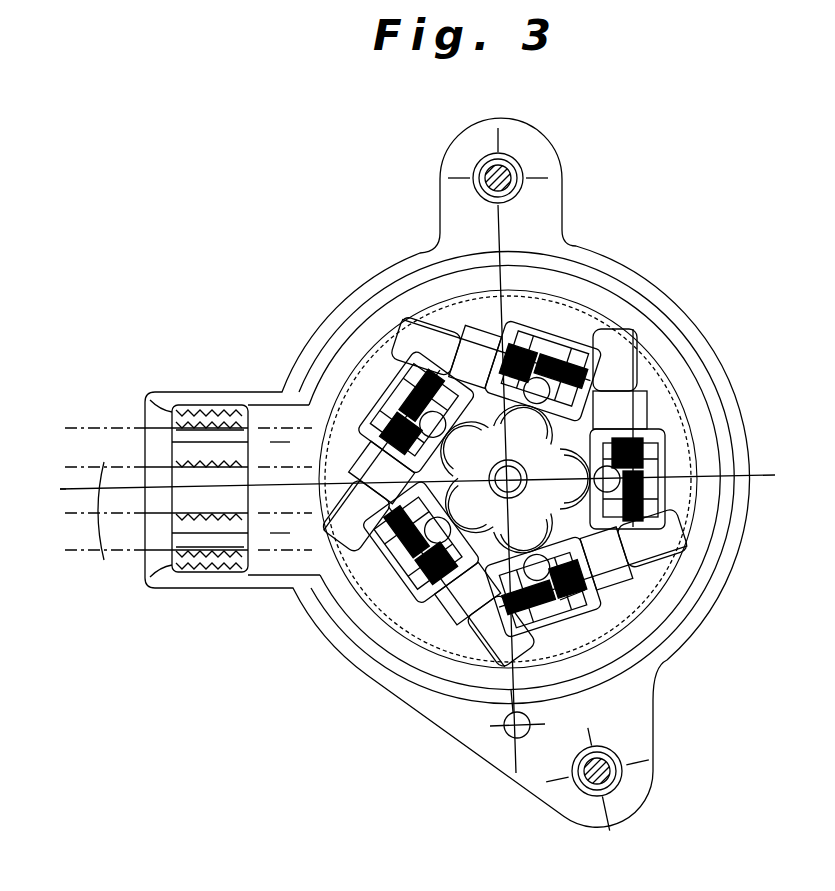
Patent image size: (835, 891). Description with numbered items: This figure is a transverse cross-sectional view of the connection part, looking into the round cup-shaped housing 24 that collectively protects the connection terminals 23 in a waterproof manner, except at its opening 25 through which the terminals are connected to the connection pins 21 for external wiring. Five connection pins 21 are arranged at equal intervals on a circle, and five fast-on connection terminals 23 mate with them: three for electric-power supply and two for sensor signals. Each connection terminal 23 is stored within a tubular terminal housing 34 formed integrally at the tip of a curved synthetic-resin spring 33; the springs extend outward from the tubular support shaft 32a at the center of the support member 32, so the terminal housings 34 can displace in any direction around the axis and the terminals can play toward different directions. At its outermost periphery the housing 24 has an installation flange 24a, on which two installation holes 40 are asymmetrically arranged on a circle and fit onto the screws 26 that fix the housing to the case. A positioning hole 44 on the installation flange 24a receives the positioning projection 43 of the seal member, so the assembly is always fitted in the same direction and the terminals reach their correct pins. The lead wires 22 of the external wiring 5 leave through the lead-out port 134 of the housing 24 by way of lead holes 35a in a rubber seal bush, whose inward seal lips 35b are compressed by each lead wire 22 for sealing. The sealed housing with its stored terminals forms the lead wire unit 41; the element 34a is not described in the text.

The external wiring 5 is at (95, 412).
The connection pins for external wiring 21 is at (653, 428).
The lead wires 22 is at (112, 568).
The connection terminals 23 is at (677, 552).
The housing 24 is at (650, 288).
The installation flange 24a is at (740, 521).
The opening 25 is at (372, 622).
The screws 26 is at (491, 162).
The support member 32 is at (478, 438).
The support shaft 32a is at (601, 577).
The synthetic-resin springs 33 is at (487, 487).
The terminal housings 34 is at (410, 372).
The brush 34a is at (703, 457).
The lead holes 35a is at (240, 430).
The seal lips 35b is at (168, 410).
The installation holes 40 is at (511, 160).
The lead wire unit 41 is at (299, 336).
The positioning projection 43 is at (506, 738).
The positioning hole 44 is at (527, 738).
The lead-out port 134 is at (208, 392).